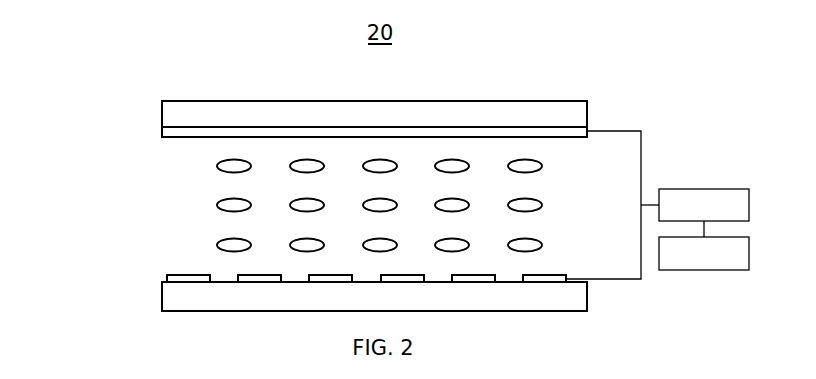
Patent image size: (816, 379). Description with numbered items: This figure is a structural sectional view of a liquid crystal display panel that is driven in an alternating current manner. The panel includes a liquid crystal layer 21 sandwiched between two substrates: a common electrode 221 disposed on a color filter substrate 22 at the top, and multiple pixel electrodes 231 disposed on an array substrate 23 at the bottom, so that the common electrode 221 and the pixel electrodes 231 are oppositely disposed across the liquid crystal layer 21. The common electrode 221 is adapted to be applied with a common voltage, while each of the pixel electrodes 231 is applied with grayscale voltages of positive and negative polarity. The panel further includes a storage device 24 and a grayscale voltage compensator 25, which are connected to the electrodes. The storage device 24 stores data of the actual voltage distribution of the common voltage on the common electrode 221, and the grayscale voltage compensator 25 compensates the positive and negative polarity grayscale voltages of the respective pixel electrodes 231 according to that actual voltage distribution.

The liquid crystal layer 21 is at (162, 192).
The color filter substrate 22 is at (167, 109).
The common electrode 221 is at (165, 134).
The array substrate 23 is at (170, 298).
The pixel electrodes 231 is at (205, 278).
The storage device 24 is at (704, 253).
The grayscale voltage compensator 25 is at (704, 205).